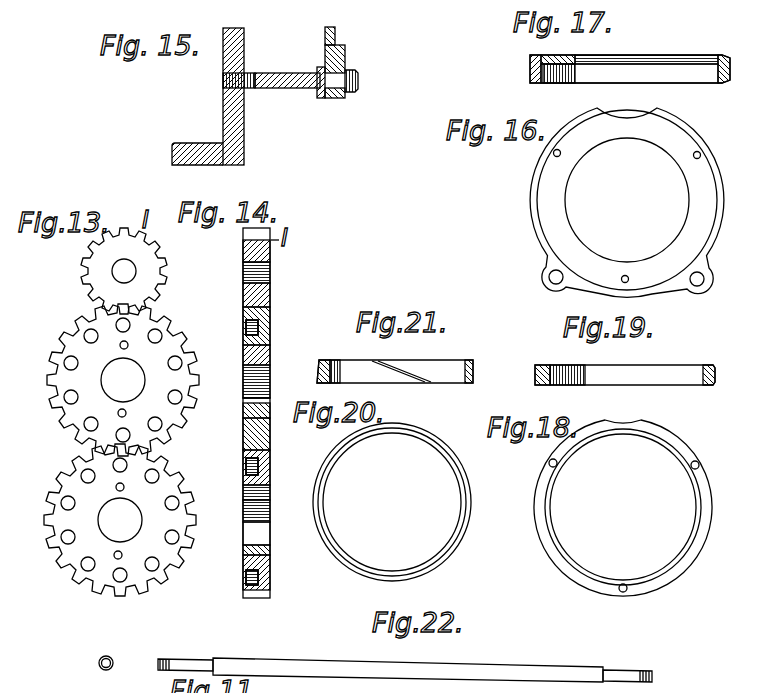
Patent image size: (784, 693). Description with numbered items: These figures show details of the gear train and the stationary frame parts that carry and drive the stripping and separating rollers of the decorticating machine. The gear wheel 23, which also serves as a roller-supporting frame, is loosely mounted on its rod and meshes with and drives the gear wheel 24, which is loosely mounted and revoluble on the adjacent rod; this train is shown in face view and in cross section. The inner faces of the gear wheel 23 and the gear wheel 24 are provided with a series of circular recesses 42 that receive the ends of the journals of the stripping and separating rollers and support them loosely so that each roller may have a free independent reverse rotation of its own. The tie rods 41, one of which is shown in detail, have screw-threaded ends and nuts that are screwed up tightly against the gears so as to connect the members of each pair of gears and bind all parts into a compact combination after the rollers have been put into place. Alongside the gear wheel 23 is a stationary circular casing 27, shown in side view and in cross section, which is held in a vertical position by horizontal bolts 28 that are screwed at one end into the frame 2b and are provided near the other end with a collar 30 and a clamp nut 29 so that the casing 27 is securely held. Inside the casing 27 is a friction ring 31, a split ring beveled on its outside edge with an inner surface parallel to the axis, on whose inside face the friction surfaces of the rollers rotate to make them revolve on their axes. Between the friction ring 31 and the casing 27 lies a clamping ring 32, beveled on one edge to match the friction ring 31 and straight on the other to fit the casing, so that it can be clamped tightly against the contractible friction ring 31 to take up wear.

In FIG. 15, the frame 2b is at (175, 143).
In FIG. 13, the gear wheel 23 is at (178, 341).
In FIG. 14, the gear wheel 23 is at (271, 318).
In FIG. 13, the gear wheel 24 is at (165, 484).
In FIG. 14, the gear wheel 24 is at (271, 479).
In FIG. 15, the stationary circular casing 27 is at (345, 46).
In FIG. 17, the stationary circular casing 27 is at (729, 65).
In FIG. 16, the stationary circular casing 27 is at (720, 181).
In FIG. 15, the horizontal bolts 28 is at (302, 89).
In FIG. 15, the clamp nut 29 is at (356, 92).
In FIG. 15, the collar 30 is at (320, 98).
In FIG. 21, the friction ring 31 is at (474, 367).
In FIG. 20, the friction ring 31 is at (448, 540).
In FIG. 19, the clamping ring 32 is at (718, 356).
In FIG. 18, the clamping ring 32 is at (674, 563).
In FIG. 22, the tie rods 41 is at (488, 665).
In FIG. 13, the circular recesses 42 is at (84, 336).
In FIG. 14, the circular recesses 42 is at (243, 432).